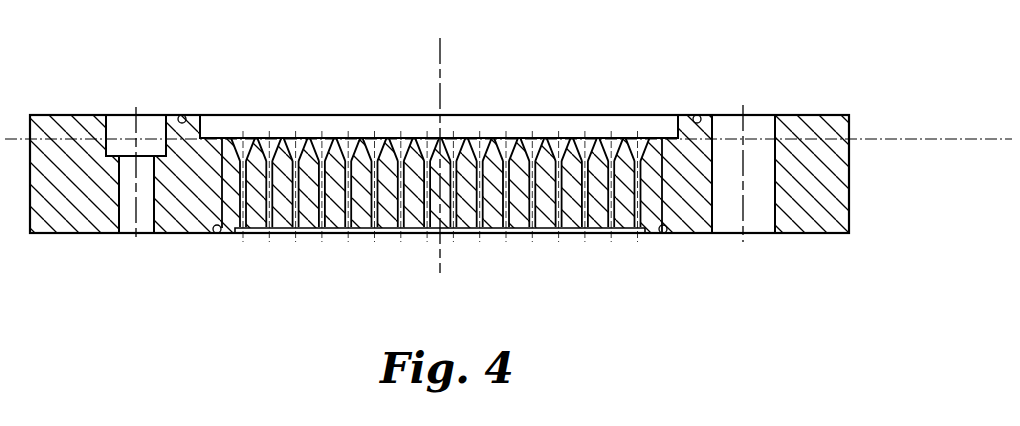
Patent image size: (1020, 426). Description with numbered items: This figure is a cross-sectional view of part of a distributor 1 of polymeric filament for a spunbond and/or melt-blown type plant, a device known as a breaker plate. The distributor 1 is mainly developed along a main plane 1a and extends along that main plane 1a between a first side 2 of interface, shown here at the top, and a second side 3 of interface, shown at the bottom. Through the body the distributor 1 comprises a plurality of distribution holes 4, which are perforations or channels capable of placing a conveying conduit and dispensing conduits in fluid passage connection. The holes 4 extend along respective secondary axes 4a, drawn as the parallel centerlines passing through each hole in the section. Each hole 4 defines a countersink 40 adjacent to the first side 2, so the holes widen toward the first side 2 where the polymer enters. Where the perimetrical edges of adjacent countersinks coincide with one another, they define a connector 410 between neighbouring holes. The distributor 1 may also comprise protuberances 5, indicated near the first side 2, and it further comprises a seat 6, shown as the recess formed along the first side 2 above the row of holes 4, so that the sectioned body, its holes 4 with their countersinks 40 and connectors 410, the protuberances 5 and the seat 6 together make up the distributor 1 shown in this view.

The distributor 1 is at (798, 56).
The main plane 1a is at (117, 137).
The first side 2 is at (202, 76).
The second side 3 is at (686, 264).
The distribution holes 4 is at (589, 237).
The secondary axes 4a is at (348, 237).
The protuberances 5 is at (566, 126).
The seat 6 is at (620, 124).
The countersink 40 is at (292, 139).
The connector 410 is at (398, 141).